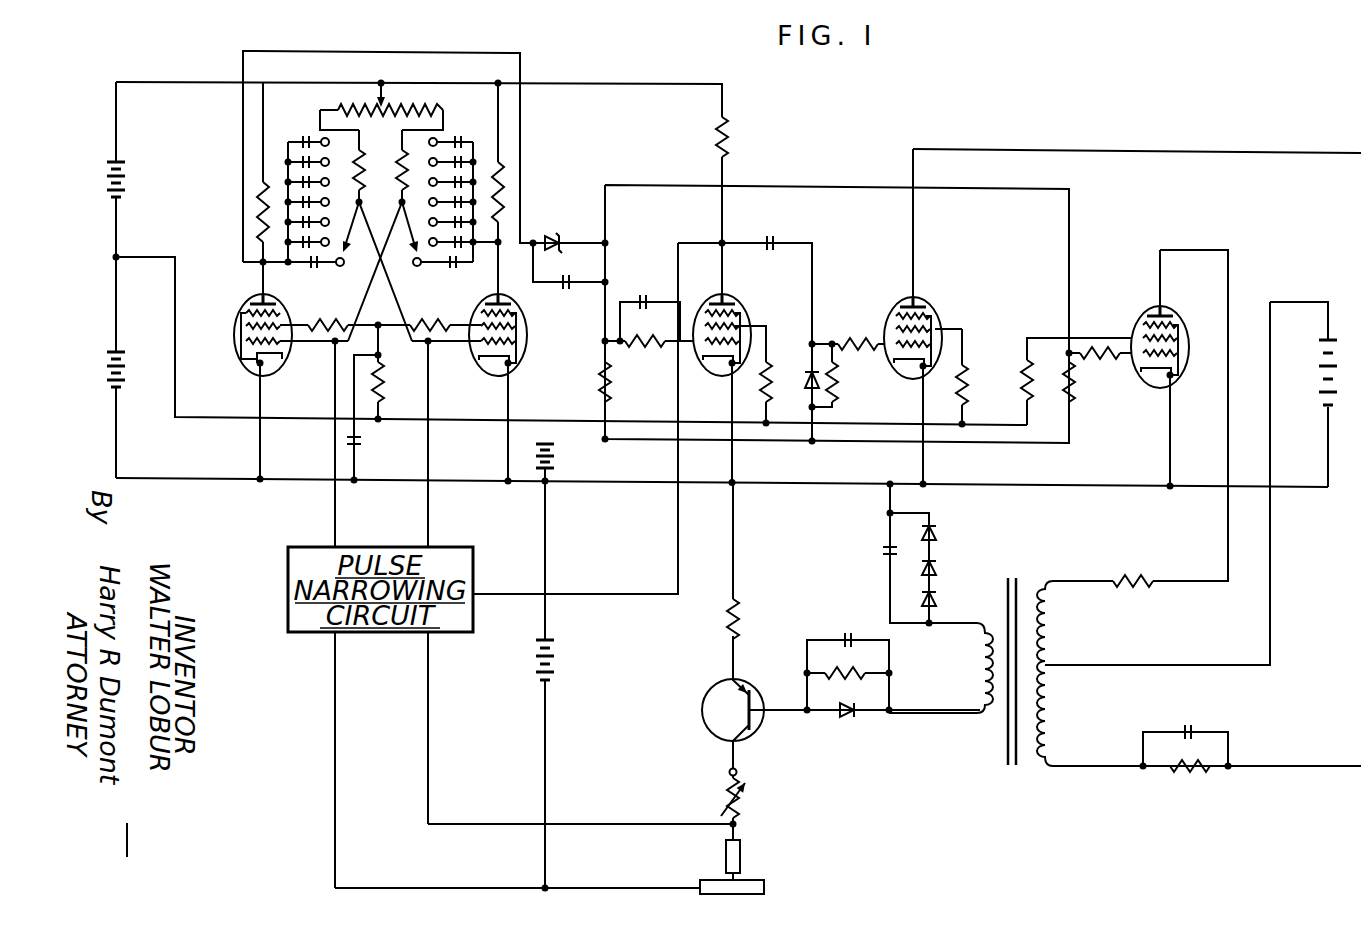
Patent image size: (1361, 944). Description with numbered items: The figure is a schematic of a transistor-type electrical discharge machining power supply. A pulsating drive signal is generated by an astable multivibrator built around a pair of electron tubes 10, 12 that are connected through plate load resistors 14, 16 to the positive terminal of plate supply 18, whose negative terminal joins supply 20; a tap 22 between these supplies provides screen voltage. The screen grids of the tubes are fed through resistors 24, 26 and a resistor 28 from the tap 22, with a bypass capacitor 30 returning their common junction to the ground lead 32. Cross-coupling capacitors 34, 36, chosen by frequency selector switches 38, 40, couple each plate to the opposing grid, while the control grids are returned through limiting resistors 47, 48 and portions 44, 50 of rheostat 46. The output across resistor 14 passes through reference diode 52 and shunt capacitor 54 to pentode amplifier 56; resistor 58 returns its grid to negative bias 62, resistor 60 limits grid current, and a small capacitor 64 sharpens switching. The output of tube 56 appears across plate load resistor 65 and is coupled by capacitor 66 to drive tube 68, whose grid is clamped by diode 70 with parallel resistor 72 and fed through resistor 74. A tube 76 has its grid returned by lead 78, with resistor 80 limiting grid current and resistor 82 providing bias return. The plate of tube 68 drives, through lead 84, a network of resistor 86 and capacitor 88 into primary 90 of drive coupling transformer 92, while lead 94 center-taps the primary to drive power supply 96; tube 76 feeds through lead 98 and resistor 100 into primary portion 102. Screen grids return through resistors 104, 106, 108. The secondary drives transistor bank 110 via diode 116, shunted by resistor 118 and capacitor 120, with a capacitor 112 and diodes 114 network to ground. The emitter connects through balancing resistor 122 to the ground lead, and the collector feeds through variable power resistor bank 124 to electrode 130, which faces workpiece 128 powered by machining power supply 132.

The electron tube 10 is at (240, 305).
The electron tube 12 is at (528, 335).
The plate load resistor 14 is at (258, 192).
The plate load resistor 16 is at (505, 175).
The plate supply 18 is at (125, 166).
The supply 20 is at (122, 352).
The tap 22 is at (118, 255).
The resistor 24 is at (322, 318).
The resistor 26 is at (440, 318).
The resistor 28 is at (384, 386).
The bypass capacitor 30 is at (362, 440).
The lead 32 is at (380, 482).
The cross-coupling capacitor 34 is at (315, 217).
The cross-coupling capacitor 36 is at (455, 217).
The frequency selector switch 38 is at (360, 246).
The frequency selector switch 40 is at (415, 250).
The portion of rheostat 44 is at (322, 110).
The rheostat 46 is at (395, 92).
The limiting resistor 47 is at (363, 173).
The limiting resistor 48 is at (402, 158).
The portion of rheostat 50 is at (440, 118).
The reference diode 52 is at (555, 236).
The shunt capacitor 54 is at (571, 285).
The pentode amplifier 56 is at (738, 304).
The resistor 58 is at (600, 378).
The resistor 60 is at (640, 350).
The negative bias 62 is at (555, 458).
The capacitor 64 is at (645, 298).
The plate load resistor 65 is at (733, 128).
The coupling capacitor 66 is at (770, 236).
The drive tube 68 is at (898, 300).
The diode 70 is at (808, 385).
The resistor 72 is at (835, 390).
The resistor 74 is at (860, 345).
The tube 76 is at (1140, 312).
The lead 78 is at (832, 186).
The resistor 80 is at (1090, 358).
The resistor 82 is at (1072, 400).
The lead 84 is at (1190, 148).
The resistor 86 is at (1190, 770).
The capacitor 88 is at (1192, 725).
The primary 90 is at (1052, 712).
The drive coupling transformer 92 is at (1012, 768).
The lead 94 is at (1170, 665).
The drive power supply 96 is at (1320, 398).
The lead 98 is at (1198, 250).
The resistor 100 is at (1128, 578).
The portion of primary 102 is at (1052, 630).
The limiting resistor 104 is at (785, 315).
The resistor 106 is at (965, 365).
The resistor 108 is at (1020, 362).
The transistor bank 110 is at (702, 712).
The capacitor 112 is at (862, 550).
The diodes 114 is at (958, 558).
The diode 116 is at (848, 722).
The resistor 118 is at (880, 676).
The capacitor 120 is at (848, 633).
The balancing resistor 122 is at (742, 626).
The variable power resistor bank 124 is at (745, 800).
The workpiece 128 is at (700, 884).
The electrode 130 is at (726, 855).
The machining power supply 132 is at (560, 660).